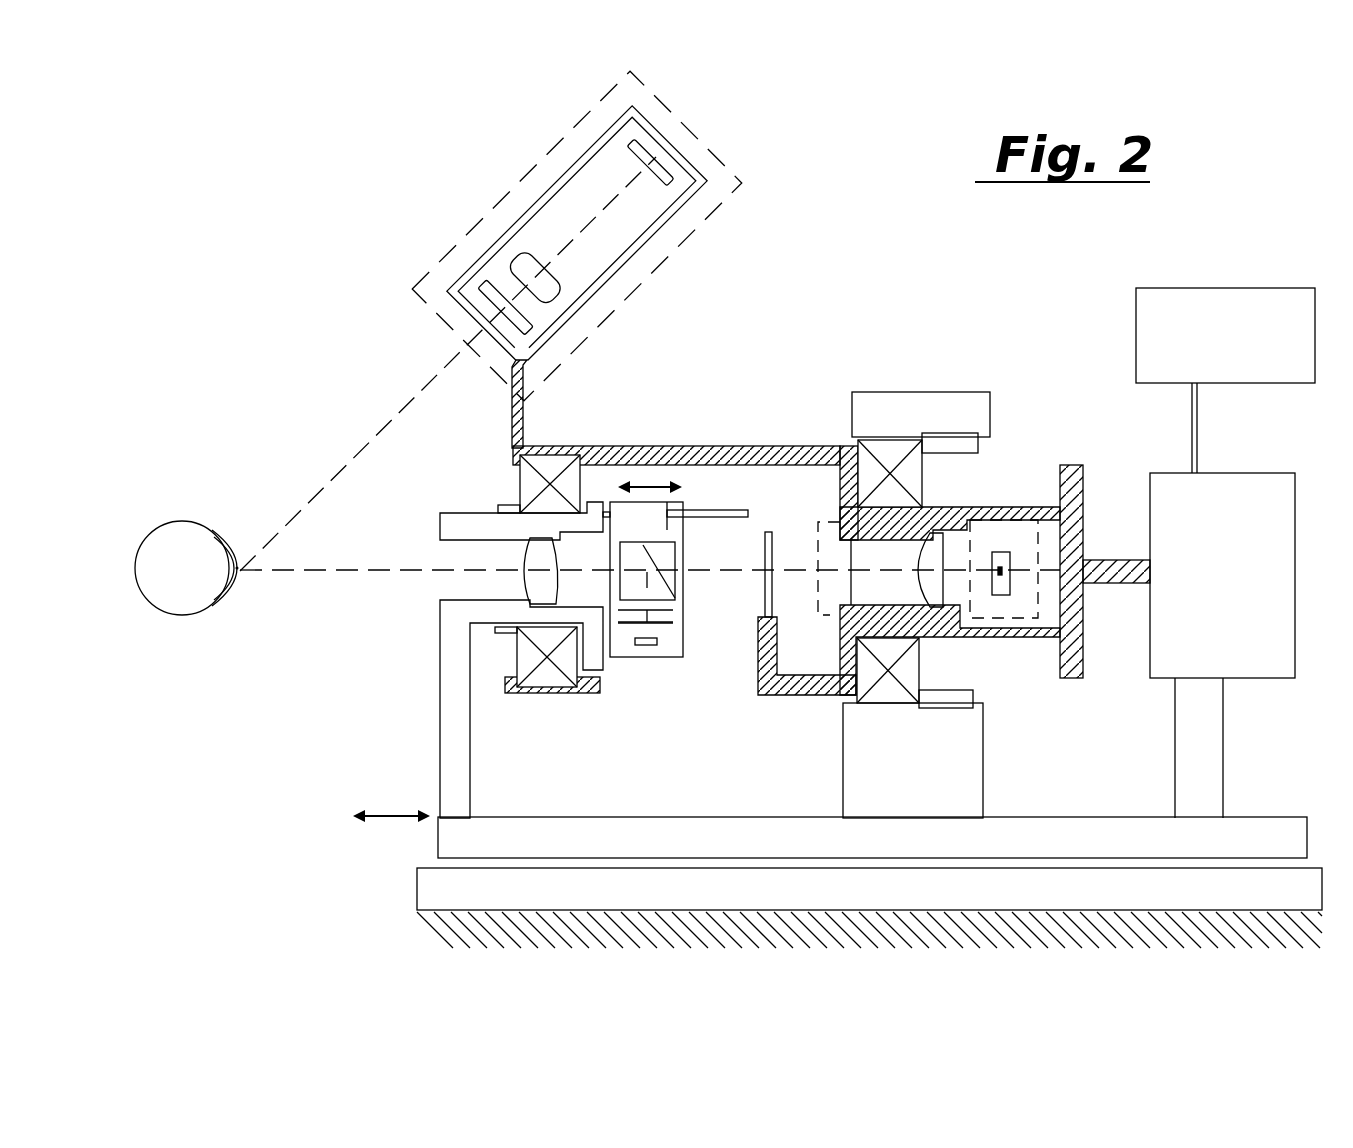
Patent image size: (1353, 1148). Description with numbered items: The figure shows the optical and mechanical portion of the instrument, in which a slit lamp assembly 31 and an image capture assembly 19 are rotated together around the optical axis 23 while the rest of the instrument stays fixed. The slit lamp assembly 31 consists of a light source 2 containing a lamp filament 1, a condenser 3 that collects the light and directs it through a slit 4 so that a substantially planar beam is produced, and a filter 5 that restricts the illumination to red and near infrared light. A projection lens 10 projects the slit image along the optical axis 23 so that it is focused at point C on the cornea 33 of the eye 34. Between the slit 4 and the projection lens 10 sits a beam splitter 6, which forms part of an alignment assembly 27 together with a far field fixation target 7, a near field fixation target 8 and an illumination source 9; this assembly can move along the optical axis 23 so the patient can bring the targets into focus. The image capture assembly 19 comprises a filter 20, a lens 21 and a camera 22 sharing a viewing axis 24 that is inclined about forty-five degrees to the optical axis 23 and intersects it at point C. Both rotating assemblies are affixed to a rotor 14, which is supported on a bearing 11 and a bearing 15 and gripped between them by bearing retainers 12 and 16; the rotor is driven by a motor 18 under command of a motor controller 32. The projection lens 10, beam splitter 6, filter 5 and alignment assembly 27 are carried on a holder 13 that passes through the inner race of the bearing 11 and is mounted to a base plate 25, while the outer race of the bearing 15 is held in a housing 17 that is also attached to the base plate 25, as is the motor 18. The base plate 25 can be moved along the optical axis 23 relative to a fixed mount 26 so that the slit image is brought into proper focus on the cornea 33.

The lamp filament 1 is at (1007, 575).
The light source 2 is at (998, 553).
The condenser 3 is at (944, 588).
The slit 4 is at (851, 582).
The filter 5 is at (757, 613).
The beam splitter 6 is at (676, 563).
The far field fixation target 7 is at (674, 614).
The near field fixation target 8 is at (621, 624).
The illumination source 9 is at (653, 646).
The projection lens 10 is at (527, 577).
The bearing 11 is at (517, 455).
The bearing retainer 12 is at (508, 504).
The holder 13 is at (470, 513).
The rotor 14 is at (653, 446).
The bearing 15 is at (923, 483).
The bearing retainer 16 is at (980, 443).
The housing 17 is at (930, 392).
The motor 18 is at (1248, 473).
The image capture assembly 19 is at (664, 262).
The filter 20 is at (540, 340).
The lens 21 is at (558, 298).
The camera 22 is at (658, 160).
The optical axis 23 is at (430, 576).
The viewing axis 24 is at (375, 435).
The base plate 25 is at (438, 847).
The fixed mount 26 is at (417, 875).
The alignment assembly 27 is at (683, 650).
The slit lamp assembly 31 is at (808, 516).
The motor controller 32 is at (1133, 323).
The cornea 33 is at (238, 583).
The eye 34 is at (192, 613).
The point C is at (238, 562).